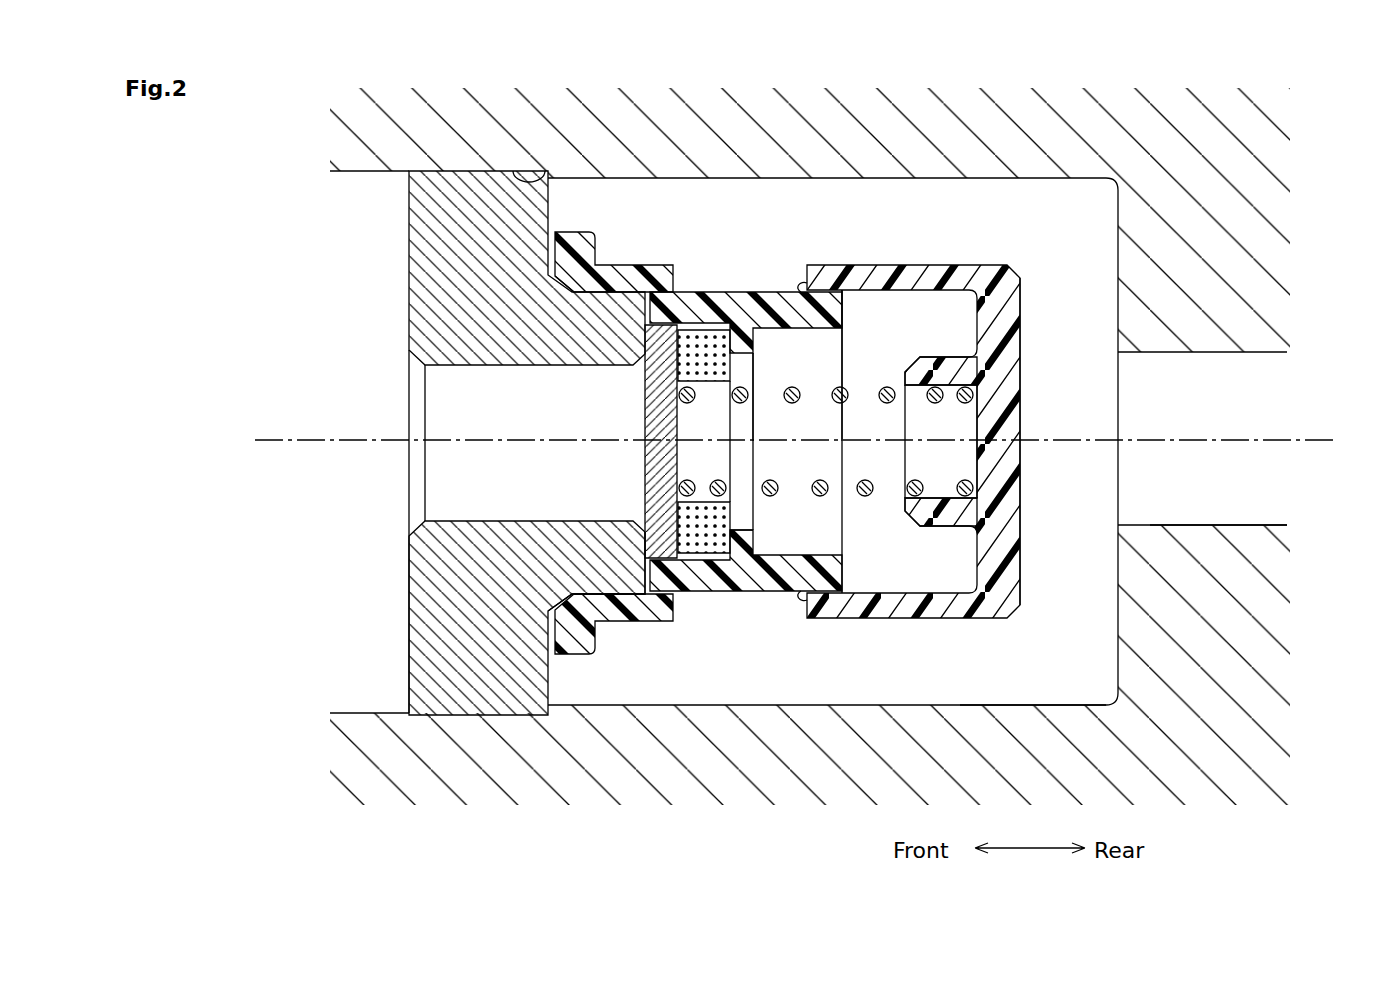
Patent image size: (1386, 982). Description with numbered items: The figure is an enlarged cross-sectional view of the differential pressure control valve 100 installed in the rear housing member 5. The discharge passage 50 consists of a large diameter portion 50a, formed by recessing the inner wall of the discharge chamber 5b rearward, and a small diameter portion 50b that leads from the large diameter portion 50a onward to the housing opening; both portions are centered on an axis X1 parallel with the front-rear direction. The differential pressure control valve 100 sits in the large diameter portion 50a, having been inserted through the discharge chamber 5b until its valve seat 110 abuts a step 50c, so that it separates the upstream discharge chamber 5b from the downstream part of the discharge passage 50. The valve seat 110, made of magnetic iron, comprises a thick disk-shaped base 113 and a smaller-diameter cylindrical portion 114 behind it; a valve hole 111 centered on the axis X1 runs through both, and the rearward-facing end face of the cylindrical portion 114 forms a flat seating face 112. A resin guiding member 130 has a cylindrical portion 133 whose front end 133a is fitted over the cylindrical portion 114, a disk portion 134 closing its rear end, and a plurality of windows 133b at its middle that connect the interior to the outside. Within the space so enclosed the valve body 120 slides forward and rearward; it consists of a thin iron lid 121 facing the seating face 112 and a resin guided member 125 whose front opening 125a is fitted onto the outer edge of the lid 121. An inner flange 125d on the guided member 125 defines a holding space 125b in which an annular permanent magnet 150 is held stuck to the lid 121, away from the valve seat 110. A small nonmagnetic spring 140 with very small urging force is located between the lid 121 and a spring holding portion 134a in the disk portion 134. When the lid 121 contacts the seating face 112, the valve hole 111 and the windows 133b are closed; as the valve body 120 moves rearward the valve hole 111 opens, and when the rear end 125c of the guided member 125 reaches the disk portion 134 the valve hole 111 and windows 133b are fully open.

The rear housing member 5 is at (1215, 262).
The discharge chamber 5b is at (373, 669).
The discharge passage 50 is at (1263, 352).
The large diameter portion 50a is at (1022, 705).
The small diameter portion 50b is at (1200, 525).
The step 50c is at (513, 171).
The differential pressure control valve 100 is at (1024, 254).
The valve seat 110 is at (407, 249).
The valve hole 111 is at (468, 522).
The seating face 112 is at (657, 594).
The base 113 is at (490, 650).
The cylindrical portion 114 is at (618, 565).
The valve body 120 is at (707, 287).
The lid 121 is at (650, 384).
The guided member 125 is at (753, 560).
The front opening 125a is at (663, 557).
The holding space 125b is at (742, 546).
The rear end 125c is at (850, 311).
The inner flange 125d is at (745, 356).
The guiding member 130 is at (1022, 320).
The cylindrical portion 133 is at (912, 278).
The front end 133a is at (577, 277).
The windows 133b is at (803, 266).
The disk portion 134 is at (1003, 378).
The spring holding portion 134a is at (985, 490).
The spring 140 is at (990, 395).
The permanent magnet 150 is at (712, 356).
The axis X1 is at (813, 439).